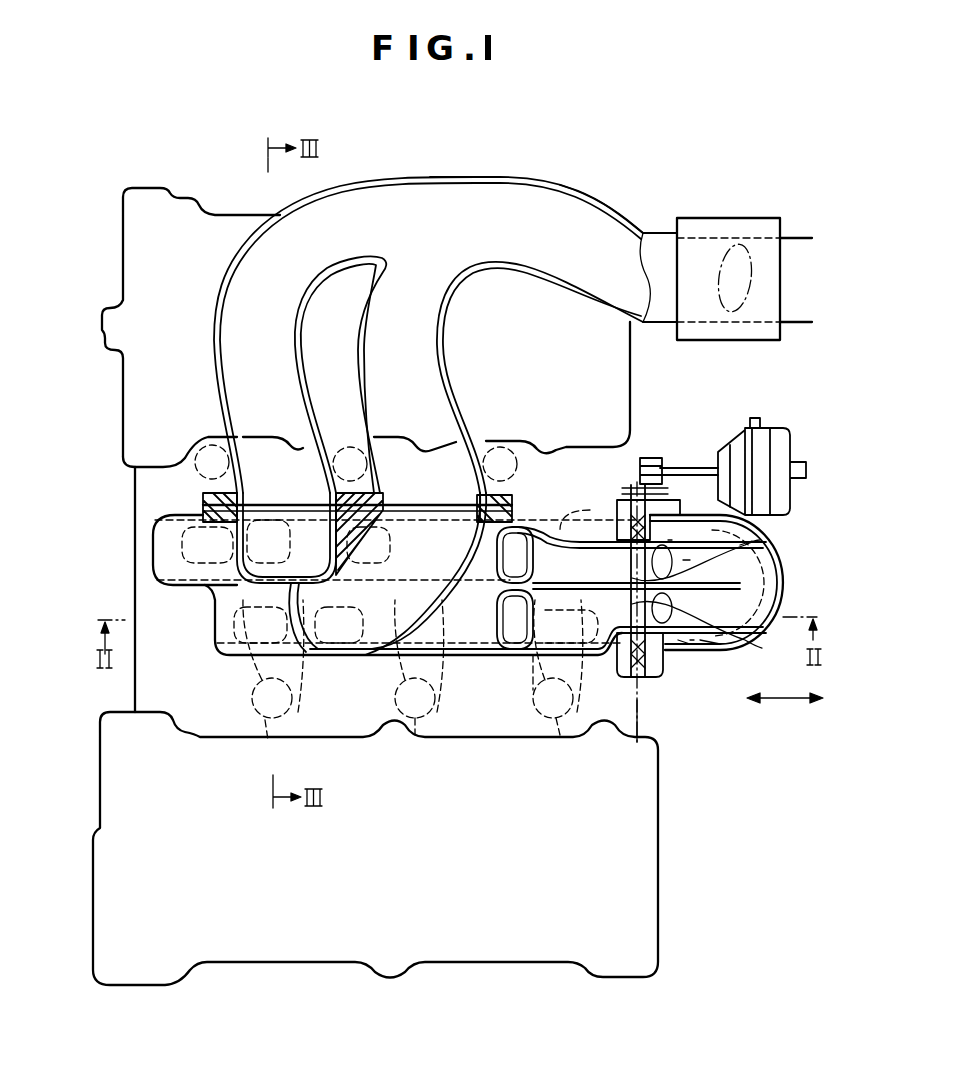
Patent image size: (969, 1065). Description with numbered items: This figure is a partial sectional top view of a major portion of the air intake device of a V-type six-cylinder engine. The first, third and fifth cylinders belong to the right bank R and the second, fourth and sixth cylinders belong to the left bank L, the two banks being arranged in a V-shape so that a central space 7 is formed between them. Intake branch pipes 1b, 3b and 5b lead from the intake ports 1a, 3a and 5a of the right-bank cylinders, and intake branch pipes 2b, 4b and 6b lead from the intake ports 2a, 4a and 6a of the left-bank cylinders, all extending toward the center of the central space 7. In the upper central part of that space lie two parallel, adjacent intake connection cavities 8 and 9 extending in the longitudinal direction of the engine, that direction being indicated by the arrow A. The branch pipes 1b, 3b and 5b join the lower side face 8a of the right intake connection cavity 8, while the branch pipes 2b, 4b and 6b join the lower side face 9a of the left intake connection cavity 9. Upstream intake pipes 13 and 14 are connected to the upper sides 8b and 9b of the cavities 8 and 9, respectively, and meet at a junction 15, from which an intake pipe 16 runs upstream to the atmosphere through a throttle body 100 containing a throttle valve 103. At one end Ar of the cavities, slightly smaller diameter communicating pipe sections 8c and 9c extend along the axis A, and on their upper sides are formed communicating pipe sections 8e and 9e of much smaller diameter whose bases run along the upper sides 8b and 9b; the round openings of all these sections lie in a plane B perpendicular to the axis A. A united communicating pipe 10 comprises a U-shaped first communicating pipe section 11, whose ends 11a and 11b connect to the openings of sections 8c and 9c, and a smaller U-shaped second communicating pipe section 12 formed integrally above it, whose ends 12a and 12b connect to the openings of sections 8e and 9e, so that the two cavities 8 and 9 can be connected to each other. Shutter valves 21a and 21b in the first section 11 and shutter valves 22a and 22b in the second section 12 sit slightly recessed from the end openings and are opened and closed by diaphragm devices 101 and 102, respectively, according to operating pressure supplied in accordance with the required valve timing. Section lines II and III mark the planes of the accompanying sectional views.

The right bank R is at (120, 386).
The left bank L is at (96, 770).
The upstream intake pipe 13 is at (298, 238).
The junction 15 is at (448, 210).
The intake pipe 16 is at (573, 218).
The upstream intake pipe 14 is at (424, 385).
The throttle body 100 is at (718, 226).
The throttle valve 103 is at (728, 292).
The diaphragm device 101 is at (770, 428).
The diaphragm device 102 is at (785, 460).
The intake port 1a is at (198, 460).
The intake branch pipe 1b is at (200, 497).
The intake port 3a is at (341, 447).
The intake branch pipe 3b is at (322, 490).
The intake port 5a is at (506, 450).
The intake branch pipe 5b is at (478, 455).
The central space 7 is at (126, 580).
The right intake connection cavity 8 is at (157, 526).
The lower side face 8a is at (153, 556).
The upper side 8b is at (470, 565).
The communicating pipe section 8c is at (593, 508).
The communicating pipe section 8e is at (572, 555).
The left intake connection cavity 9 is at (214, 636).
The lower side face 9a is at (213, 607).
The upper side 9b is at (478, 660).
The communicating pipe section 9c is at (606, 662).
The communicating pipe section 9e is at (527, 690).
The intake port 2a is at (265, 718).
The intake branch pipe 2b is at (238, 690).
The intake port 4a is at (418, 722).
The intake branch pipe 4b is at (372, 676).
The intake port 6a is at (575, 720).
The intake branch pipe 6b is at (526, 668).
The united communicating pipe 10 is at (805, 535).
The first communicating pipe section 11 is at (762, 550).
The end of first communicating pipe section 11a is at (633, 500).
The end of first communicating pipe section 11b is at (652, 660).
The second communicating pipe section 12 is at (764, 600).
The end of second communicating pipe section 12a is at (685, 560).
The end of second communicating pipe section 12b is at (712, 640).
The shutter valve 21a is at (668, 540).
The shutter valve 21b is at (692, 644).
The shutter valve 22a is at (740, 545).
The shutter valve 22b is at (678, 640).
The axial direction arrow A is at (783, 697).
The one end Ar is at (818, 714).
The plane B is at (650, 724).
The section line II is at (459, 642).
The section line III is at (295, 473).